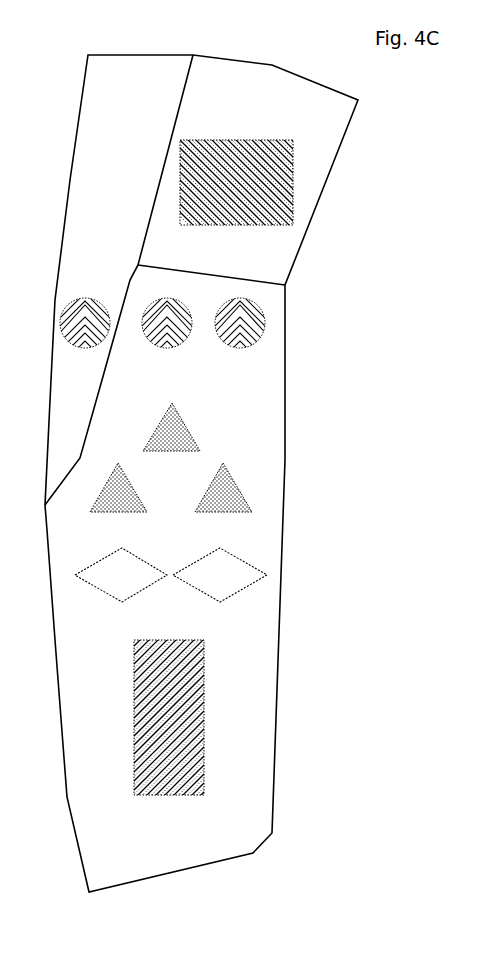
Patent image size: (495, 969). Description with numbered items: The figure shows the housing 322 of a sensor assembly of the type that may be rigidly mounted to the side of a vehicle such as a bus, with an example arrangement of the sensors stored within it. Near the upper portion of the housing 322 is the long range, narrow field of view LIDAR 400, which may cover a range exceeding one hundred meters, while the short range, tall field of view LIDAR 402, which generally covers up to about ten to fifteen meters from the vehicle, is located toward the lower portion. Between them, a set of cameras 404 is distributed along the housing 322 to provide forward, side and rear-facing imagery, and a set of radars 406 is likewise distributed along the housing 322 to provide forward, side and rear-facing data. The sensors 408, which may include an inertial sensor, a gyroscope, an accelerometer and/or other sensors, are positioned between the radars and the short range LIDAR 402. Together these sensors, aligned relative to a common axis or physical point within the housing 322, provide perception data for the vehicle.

The housing 322 is at (462, 91).
The long range, narrow field of view LIDAR 400 is at (293, 181).
The short range, tall field of view LIDAR 402 is at (205, 718).
The set of cameras 404 is at (265, 323).
The set of radars 406 is at (196, 433).
The sensors 408 is at (248, 563).